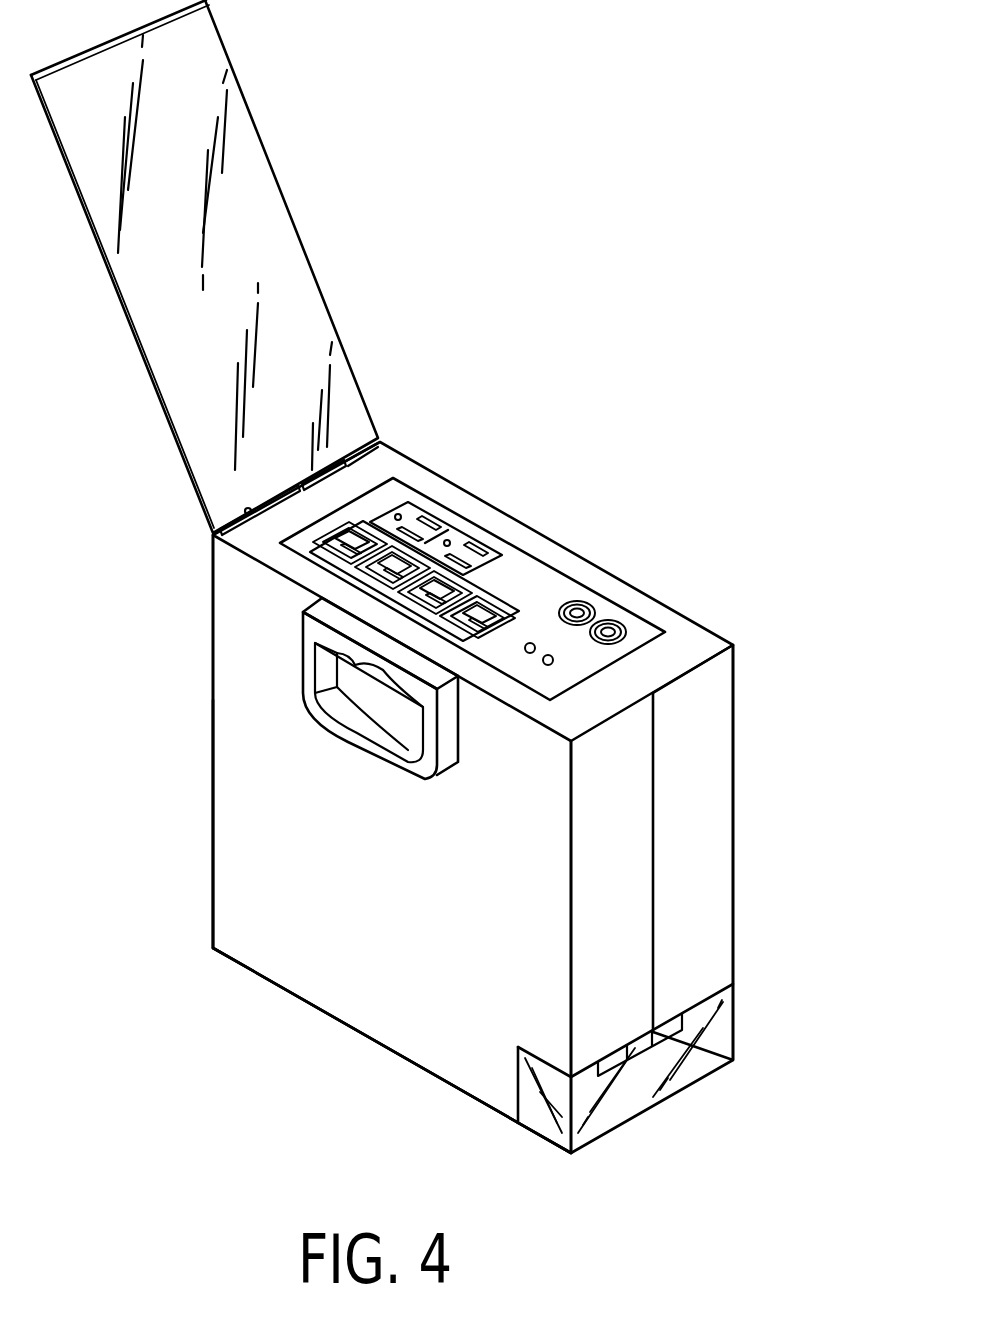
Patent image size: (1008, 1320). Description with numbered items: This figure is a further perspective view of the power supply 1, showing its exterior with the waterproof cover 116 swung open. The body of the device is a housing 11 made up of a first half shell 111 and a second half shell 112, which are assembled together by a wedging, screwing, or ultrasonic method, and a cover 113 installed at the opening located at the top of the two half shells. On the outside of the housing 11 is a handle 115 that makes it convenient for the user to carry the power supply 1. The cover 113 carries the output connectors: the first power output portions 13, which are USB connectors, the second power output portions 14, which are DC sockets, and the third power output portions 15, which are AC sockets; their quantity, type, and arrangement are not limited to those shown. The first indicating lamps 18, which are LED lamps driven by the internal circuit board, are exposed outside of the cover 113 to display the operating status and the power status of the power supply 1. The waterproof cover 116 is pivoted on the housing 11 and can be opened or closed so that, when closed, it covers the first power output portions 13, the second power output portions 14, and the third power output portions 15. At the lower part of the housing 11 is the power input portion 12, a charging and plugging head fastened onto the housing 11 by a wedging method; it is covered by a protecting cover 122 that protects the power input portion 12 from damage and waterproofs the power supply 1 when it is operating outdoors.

The power supply 1 is at (737, 690).
The housing 11 is at (244, 826).
The first half shell 111 is at (347, 988).
The second half shell 112 is at (722, 880).
The cover 113 is at (638, 632).
The handle 115 is at (307, 673).
The waterproof cover 116 is at (267, 193).
The power input portion 12 is at (627, 1062).
The protecting cover 122 is at (722, 1050).
The first power output portions 13 is at (337, 543).
The second power output portions 14 is at (587, 601).
The third power output portions 15 is at (428, 518).
The first indicating lamps 18 is at (530, 643).